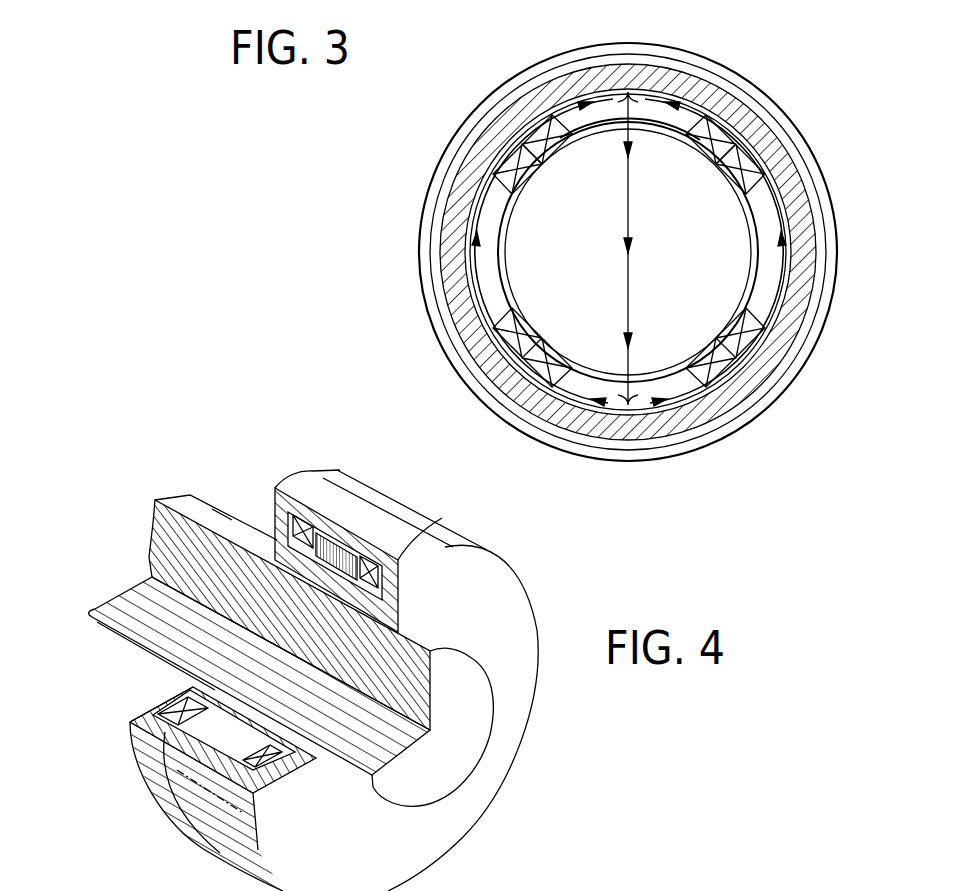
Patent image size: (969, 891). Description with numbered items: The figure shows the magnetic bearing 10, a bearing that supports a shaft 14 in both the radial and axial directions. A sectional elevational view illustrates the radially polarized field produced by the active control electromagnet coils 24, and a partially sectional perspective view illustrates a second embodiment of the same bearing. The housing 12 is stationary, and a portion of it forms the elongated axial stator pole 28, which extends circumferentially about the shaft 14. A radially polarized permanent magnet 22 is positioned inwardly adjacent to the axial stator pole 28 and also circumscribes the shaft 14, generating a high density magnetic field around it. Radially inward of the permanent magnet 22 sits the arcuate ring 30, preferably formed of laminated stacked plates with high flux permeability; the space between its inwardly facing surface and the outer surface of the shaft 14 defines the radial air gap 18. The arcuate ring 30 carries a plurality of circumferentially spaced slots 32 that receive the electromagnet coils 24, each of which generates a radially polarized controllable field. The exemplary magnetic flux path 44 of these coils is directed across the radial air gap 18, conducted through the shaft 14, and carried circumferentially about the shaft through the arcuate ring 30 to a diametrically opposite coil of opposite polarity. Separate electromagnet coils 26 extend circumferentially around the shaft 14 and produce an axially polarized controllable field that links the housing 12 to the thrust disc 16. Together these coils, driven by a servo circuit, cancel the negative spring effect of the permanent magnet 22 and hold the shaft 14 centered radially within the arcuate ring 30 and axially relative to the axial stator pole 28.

In FIG. 3, the magnetic bearing 10 is at (747, 443).
In FIG. 4, the magnetic bearing 10 is at (243, 457).
In FIG. 3, the shaft 14 is at (500, 280).
In FIG. 4, the shaft 14 is at (470, 767).
In FIG. 3, the radial air gap 18 is at (648, 120).
In FIG. 4, the radial air gap 18 is at (360, 560).
In FIG. 3, the permanent magnet 22 is at (793, 183).
In FIG. 4, the permanent magnet 22 is at (177, 792).
In FIG. 3, the electromagnet coils 24 is at (533, 135).
In FIG. 4, the electromagnet coils 24 is at (165, 715).
In FIG. 3, the axial stator pole 28 is at (815, 307).
In FIG. 4, the axial stator pole 28 is at (333, 468).
In FIG. 3, the arcuate ring 30 is at (757, 305).
In FIG. 4, the arcuate ring 30 is at (257, 753).
In FIG. 3, the slots 32 is at (557, 135).
In FIG. 3, the magnetic flux path 44 is at (472, 237).
In FIG. 4, the housing 12 is at (532, 570).
In FIG. 4, the thrust disc 16 is at (296, 730).
In FIG. 4, the electromagnet coils 26 is at (137, 766).